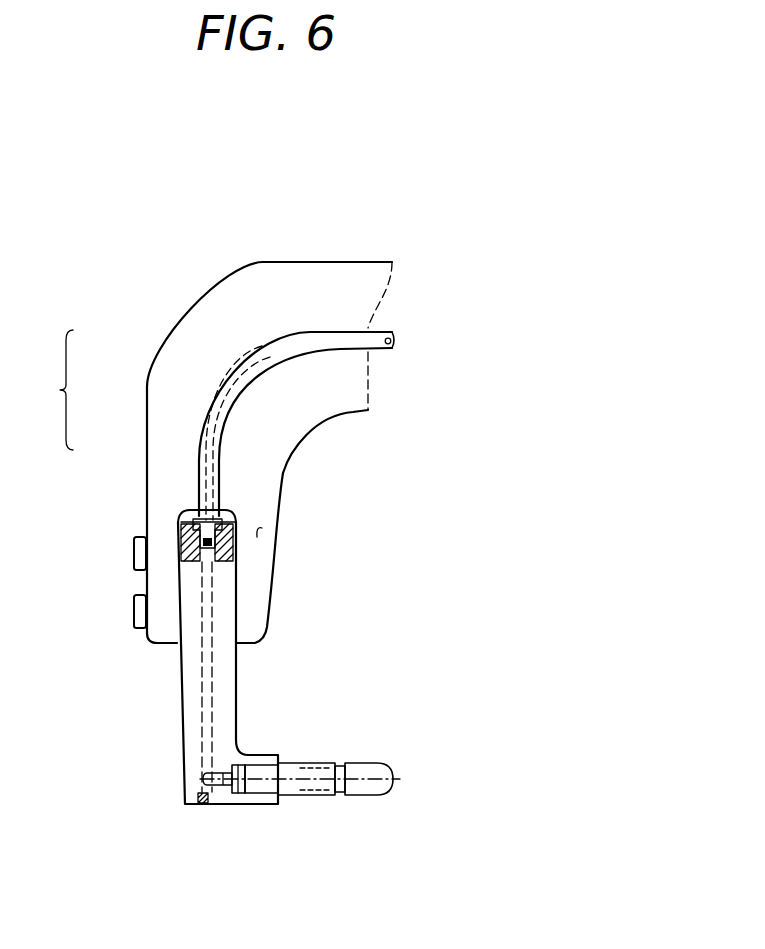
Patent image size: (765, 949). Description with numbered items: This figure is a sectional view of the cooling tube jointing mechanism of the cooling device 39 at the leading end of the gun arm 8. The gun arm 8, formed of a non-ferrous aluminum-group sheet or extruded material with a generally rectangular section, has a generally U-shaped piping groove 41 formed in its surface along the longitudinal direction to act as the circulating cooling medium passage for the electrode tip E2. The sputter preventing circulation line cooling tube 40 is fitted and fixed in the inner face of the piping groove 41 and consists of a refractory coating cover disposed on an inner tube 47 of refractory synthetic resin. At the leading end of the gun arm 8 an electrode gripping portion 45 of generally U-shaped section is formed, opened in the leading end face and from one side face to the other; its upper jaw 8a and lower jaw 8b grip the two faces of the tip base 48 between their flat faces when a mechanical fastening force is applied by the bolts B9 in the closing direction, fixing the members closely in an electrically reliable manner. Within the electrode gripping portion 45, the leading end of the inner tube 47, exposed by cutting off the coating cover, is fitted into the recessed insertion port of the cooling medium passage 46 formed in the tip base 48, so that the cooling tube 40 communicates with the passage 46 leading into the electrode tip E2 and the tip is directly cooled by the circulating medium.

The gun arm 8 is at (302, 263).
The upper jaw 8a is at (163, 579).
The lower jaw 8b is at (257, 585).
The bolts B9 is at (135, 550).
The cooling device 39 is at (51, 390).
The circulation line cooling tube 40 is at (236, 372).
The piping groove 41 is at (212, 415).
The inner tube 47 is at (198, 517).
The electrode gripping portion 45 is at (262, 528).
The tip base 48 is at (190, 687).
The cooling medium passage 46 is at (207, 712).
The electrode tip E2 is at (375, 788).